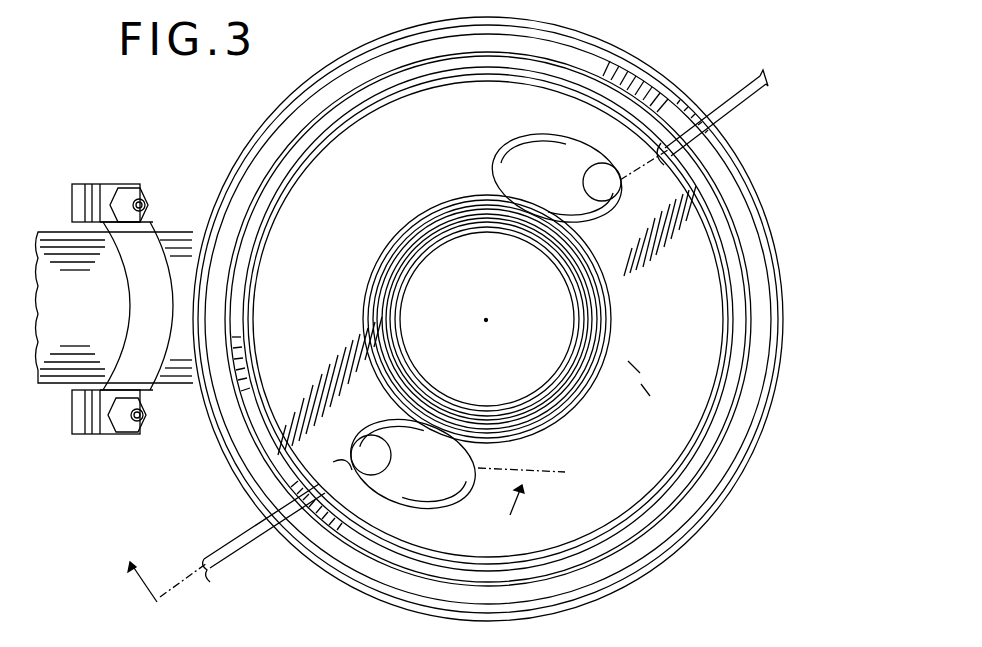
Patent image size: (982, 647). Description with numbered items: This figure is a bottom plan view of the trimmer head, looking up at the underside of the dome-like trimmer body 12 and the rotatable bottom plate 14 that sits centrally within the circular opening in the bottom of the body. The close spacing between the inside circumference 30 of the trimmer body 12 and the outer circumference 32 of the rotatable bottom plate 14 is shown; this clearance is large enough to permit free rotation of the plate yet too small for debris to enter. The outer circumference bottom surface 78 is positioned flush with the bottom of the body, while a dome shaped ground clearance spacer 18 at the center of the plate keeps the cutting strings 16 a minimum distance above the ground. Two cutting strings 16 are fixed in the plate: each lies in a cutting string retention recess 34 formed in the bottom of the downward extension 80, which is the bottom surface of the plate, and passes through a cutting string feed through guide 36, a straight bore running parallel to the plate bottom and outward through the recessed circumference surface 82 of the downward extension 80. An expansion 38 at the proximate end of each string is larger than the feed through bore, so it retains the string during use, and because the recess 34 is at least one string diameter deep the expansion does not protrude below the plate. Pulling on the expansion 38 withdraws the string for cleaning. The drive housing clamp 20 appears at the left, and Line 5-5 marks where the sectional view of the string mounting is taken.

The Line 5- 5 is at (316, 543).
The trimmer body 12 is at (745, 462).
The rotatable bottom plate 14 is at (518, 86).
The cutting string 16 is at (243, 552).
The ground clearance spacer 18 is at (550, 355).
The flange clamp assembly 20 is at (180, 223).
The inside circumference 30 is at (750, 297).
The outer circumference 32 is at (746, 242).
The cutting string retention recess 34 is at (588, 136).
The cutting string feed through guide 36 is at (672, 148).
The expansion 38 is at (598, 182).
The outer circumference bottom surface 78 is at (722, 390).
The downward extension 80 is at (712, 368).
The recessed circumference surface 82 is at (652, 166).